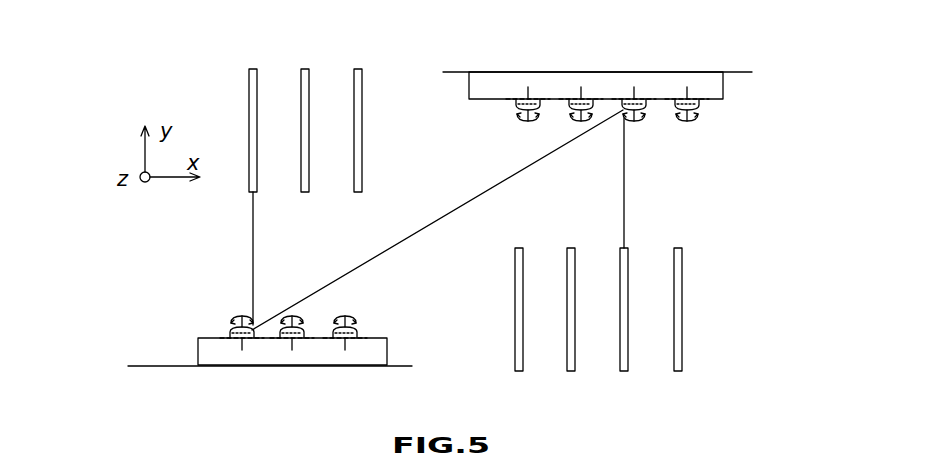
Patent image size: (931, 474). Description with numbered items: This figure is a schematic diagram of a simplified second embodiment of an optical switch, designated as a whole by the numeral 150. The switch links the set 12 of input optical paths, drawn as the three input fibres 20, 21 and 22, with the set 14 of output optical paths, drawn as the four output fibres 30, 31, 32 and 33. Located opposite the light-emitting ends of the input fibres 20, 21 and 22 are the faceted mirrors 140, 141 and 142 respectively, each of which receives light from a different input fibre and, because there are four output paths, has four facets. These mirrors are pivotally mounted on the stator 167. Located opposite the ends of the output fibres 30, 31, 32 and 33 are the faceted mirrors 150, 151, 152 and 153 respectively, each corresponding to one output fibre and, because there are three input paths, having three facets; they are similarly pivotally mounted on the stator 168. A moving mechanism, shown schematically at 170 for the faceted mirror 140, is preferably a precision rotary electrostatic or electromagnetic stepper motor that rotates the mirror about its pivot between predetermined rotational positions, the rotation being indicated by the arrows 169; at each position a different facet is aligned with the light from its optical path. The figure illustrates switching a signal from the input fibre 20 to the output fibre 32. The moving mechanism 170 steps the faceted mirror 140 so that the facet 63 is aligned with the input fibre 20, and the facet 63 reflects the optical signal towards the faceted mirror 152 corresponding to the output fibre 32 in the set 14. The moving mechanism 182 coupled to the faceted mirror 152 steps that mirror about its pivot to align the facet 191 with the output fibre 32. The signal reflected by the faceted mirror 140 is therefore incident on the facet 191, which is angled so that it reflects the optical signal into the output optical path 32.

The set of M input optical paths 12 is at (245, 52).
The input fibre 20 is at (257, 125).
The input fibre 21 is at (309, 125).
The input fibre 22 is at (362, 125).
The set of N output optical paths 14 is at (510, 382).
The output fibre 30 is at (523, 310).
The output fibre 31 is at (575, 310).
The output fibre 32 is at (628, 310).
The output fibre 33 is at (682, 310).
The mirror facet 63 is at (258, 331).
The faceted mirror 140 is at (220, 332).
The faceted mirror 141 is at (307, 335).
The faceted mirror 142 is at (363, 333).
The faceted mirror 150 is at (512, 103).
The faceted mirror 151 is at (565, 103).
The faceted mirror 152 is at (647, 108).
The faceted mirror 153 is at (707, 108).
The stator 167 is at (198, 350).
The stator 168 is at (723, 87).
The arrows 169 is at (235, 313).
The moving mechanism 170 is at (235, 342).
The moving mechanism 182 is at (648, 99).
The mirror facet 191 is at (618, 106).